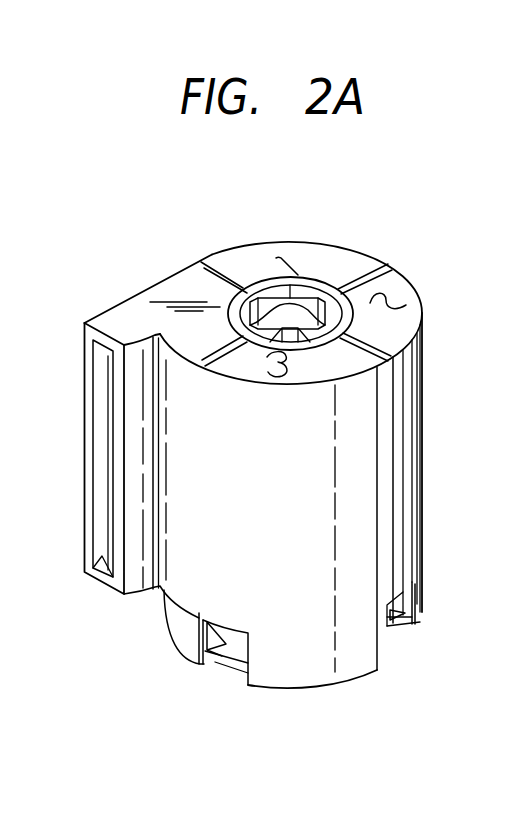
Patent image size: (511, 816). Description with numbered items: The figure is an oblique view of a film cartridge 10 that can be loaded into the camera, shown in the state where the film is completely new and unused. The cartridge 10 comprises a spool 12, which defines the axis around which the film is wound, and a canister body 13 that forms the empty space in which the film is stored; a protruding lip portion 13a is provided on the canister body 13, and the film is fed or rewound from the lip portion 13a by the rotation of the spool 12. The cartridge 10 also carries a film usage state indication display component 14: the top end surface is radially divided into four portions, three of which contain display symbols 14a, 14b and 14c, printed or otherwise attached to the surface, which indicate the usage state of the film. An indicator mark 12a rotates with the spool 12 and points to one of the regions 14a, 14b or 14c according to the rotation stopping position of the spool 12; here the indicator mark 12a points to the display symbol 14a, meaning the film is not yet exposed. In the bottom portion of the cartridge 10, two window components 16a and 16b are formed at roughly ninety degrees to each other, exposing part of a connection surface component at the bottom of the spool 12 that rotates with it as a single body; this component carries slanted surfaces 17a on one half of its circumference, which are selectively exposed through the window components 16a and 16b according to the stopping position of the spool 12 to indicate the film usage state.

The film cartridge 10 is at (326, 222).
The spool 12 is at (238, 287).
The indicator mark 12a is at (272, 293).
The canister body 13 is at (139, 303).
The protruding lip portion 13a is at (107, 322).
The film usage state indication display component 14 is at (410, 314).
The display symbol "1" 14a is at (355, 262).
The display symbol "2" 14b is at (404, 292).
The display symbol "3" 14c is at (364, 371).
The window component 16a is at (228, 622).
The window component 16b is at (402, 593).
The slanted surfaces 17a is at (237, 653).